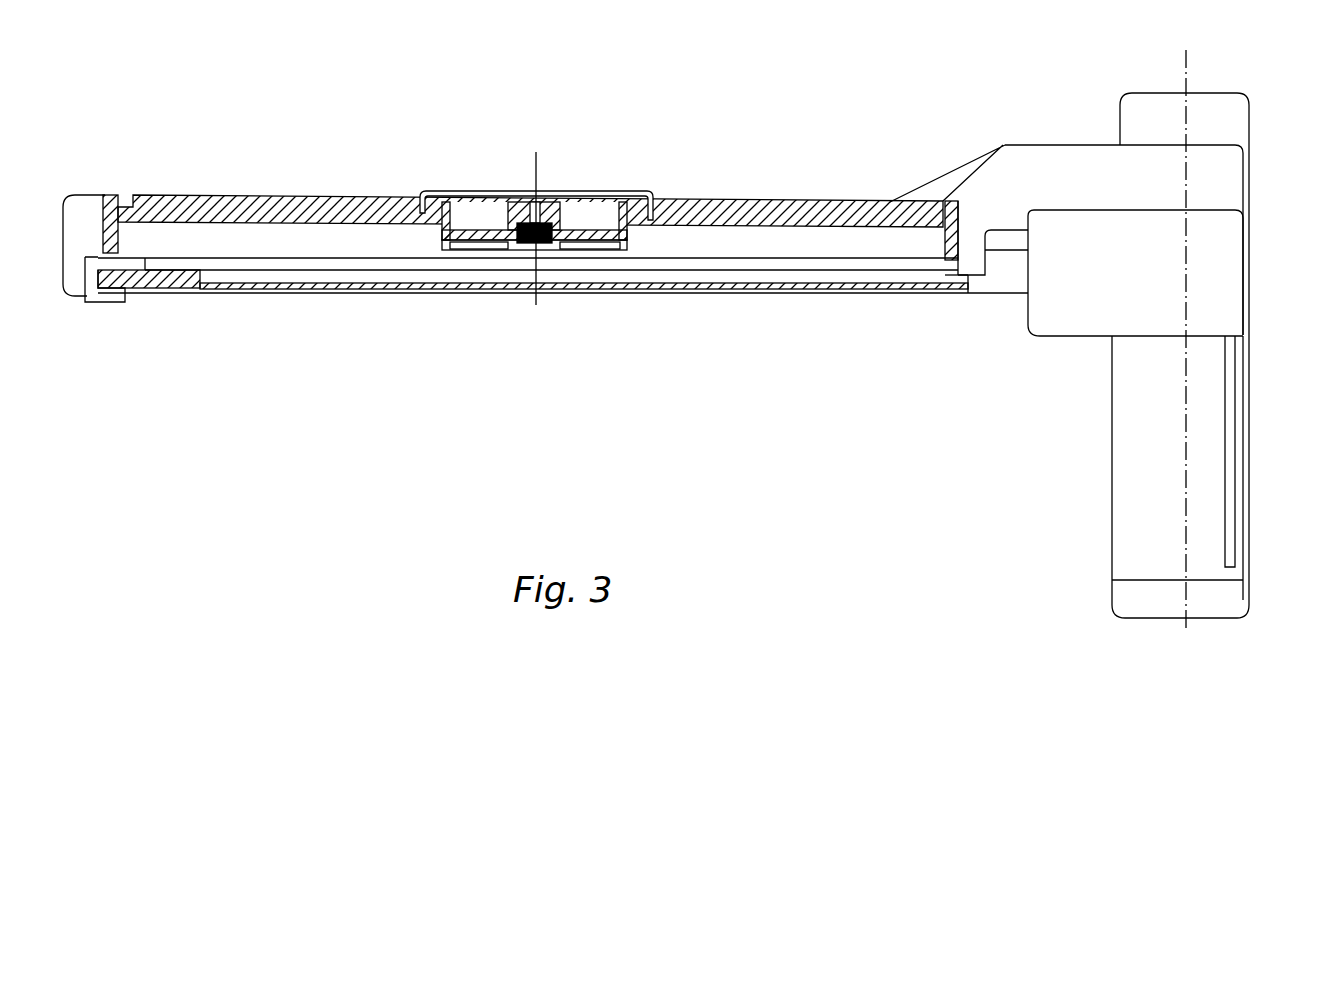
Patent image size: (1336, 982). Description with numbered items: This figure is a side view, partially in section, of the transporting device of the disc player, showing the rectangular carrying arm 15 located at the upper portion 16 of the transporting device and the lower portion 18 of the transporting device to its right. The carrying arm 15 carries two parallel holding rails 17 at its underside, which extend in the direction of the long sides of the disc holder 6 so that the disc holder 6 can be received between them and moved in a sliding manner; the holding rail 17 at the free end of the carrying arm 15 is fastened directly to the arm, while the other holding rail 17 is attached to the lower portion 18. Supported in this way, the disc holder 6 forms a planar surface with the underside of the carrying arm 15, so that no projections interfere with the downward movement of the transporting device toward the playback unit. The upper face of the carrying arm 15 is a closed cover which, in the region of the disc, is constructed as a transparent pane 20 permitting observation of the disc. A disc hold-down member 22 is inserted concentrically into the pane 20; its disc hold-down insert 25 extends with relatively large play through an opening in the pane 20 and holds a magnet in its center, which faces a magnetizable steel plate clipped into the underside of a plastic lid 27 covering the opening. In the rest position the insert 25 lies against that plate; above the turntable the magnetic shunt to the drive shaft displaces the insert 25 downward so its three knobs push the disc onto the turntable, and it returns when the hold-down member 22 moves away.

The disc holder 6 is at (890, 294).
The carrying arm 15 is at (90, 213).
The upper portion 16 is at (1032, 160).
The holding rails 17 is at (103, 302).
The lower portion 18 is at (1070, 342).
The transparent pane 20 is at (312, 196).
The disc hold-down member 22 is at (479, 176).
The disc hold-down insert 25 is at (583, 242).
The plastic lid 27 is at (612, 190).